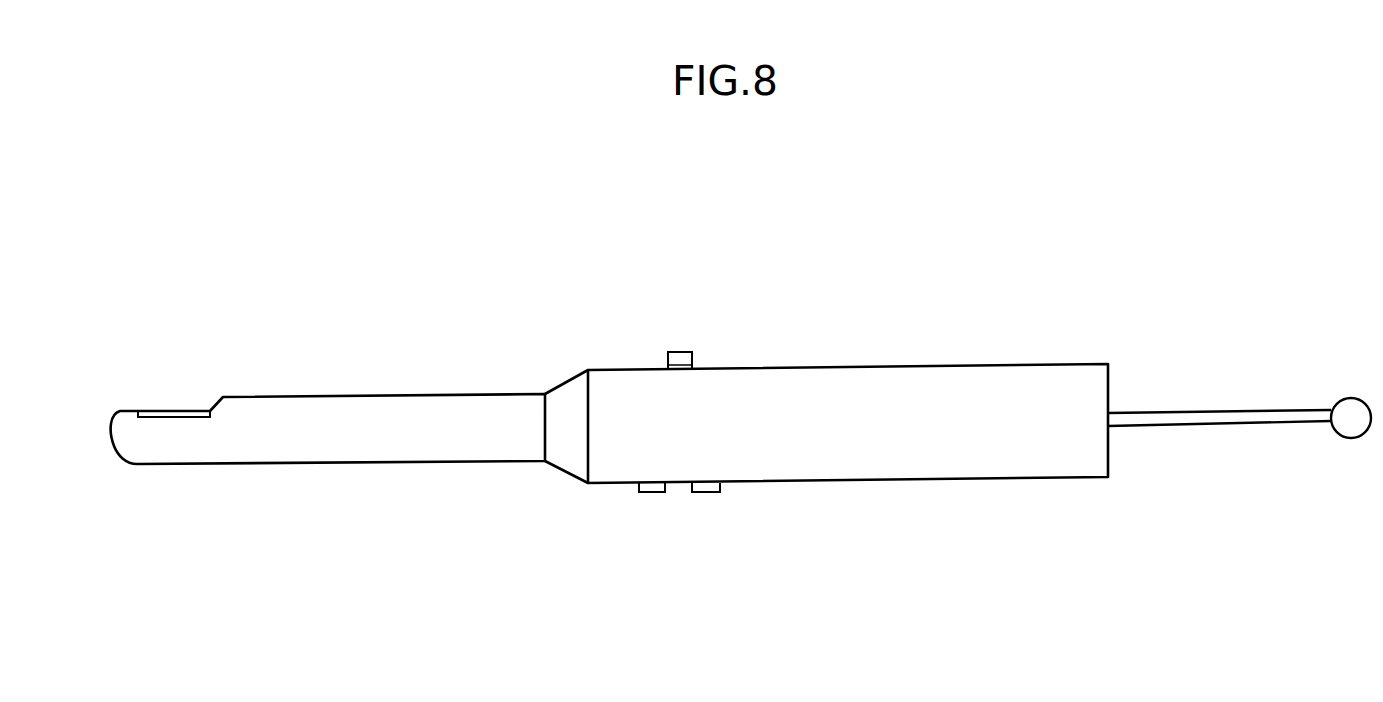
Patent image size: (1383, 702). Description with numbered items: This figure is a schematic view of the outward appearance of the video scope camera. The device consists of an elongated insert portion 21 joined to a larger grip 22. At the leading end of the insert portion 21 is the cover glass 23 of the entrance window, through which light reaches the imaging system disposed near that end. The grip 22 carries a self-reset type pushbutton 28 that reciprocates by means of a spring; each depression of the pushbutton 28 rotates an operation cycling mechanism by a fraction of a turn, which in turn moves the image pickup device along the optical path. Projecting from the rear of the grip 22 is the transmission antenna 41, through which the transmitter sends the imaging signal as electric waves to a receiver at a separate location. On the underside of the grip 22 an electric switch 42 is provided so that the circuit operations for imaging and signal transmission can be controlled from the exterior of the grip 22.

The insert portion 21 is at (252, 396).
The grip 22 is at (862, 366).
The cover glass of an entrance window 23 is at (165, 409).
The pushbutton 28 is at (680, 350).
The transmission antenna 41 is at (1170, 412).
The electric switch 42 is at (707, 492).